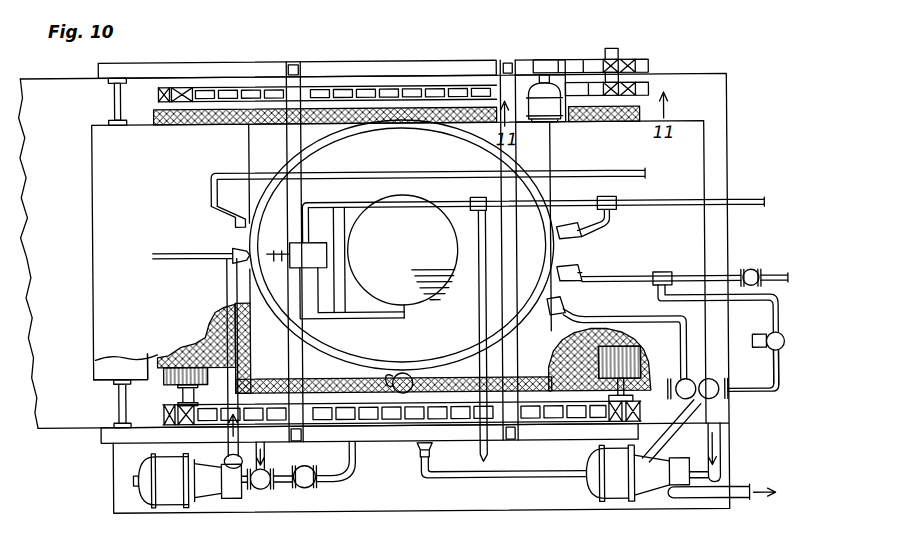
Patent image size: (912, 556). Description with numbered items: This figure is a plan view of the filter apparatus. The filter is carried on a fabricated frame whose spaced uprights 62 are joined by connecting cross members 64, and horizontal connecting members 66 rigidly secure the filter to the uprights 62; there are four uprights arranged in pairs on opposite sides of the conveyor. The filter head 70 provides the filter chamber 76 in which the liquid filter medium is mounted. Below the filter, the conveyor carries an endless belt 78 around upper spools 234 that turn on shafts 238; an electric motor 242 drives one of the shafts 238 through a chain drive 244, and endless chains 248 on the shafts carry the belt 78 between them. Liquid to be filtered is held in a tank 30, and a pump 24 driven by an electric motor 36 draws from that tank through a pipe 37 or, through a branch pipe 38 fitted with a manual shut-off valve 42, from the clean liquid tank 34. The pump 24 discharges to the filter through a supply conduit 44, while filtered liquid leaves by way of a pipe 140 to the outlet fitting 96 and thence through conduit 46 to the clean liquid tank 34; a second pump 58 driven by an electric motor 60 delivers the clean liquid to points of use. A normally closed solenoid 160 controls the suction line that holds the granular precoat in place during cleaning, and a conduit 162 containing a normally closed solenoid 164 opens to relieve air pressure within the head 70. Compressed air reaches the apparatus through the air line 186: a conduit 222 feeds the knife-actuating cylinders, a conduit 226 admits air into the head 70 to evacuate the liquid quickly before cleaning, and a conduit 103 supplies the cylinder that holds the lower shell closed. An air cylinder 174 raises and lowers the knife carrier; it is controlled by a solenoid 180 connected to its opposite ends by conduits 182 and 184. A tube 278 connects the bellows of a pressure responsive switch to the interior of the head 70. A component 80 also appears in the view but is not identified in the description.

The clean liquid tank 34 is at (729, 116).
The contaminated liquid tank 30 is at (67, 420).
The filter chamber 76 is at (117, 208).
The seal housing 80 is at (106, 378).
The connecting cross members 64 is at (390, 62).
The endless chains 248 is at (420, 84).
The conveyor belt 78 is at (213, 122).
The uprights 62 is at (294, 62).
The horizontal connecting members 66 is at (287, 141).
The electric motor 242 is at (553, 124).
The chain drive 244 is at (597, 58).
The air cylinder 174 is at (436, 298).
The conduit 226 is at (412, 180).
The compressed air line 186 is at (312, 206).
The solenoid 180 is at (328, 253).
The conduit 182 is at (321, 296).
The conduit 184 is at (404, 320).
The conduit 103 is at (487, 268).
The conduit 222 is at (597, 224).
The head 70 is at (560, 258).
The outlet fitting 96 is at (557, 291).
The conduit 46 is at (636, 281).
The solenoid 160 is at (765, 257).
The conduit 162 is at (769, 335).
The solenoid 164 is at (770, 386).
The upper spools 234 is at (620, 348).
The shafts 238 is at (625, 391).
The electric motor 60 is at (612, 500).
The second pump 58 is at (680, 461).
The pipe 140 is at (513, 478).
The electric motor 36 is at (172, 503).
The pump 24 is at (231, 498).
The supply conduit 44 is at (226, 279).
The tube 278 is at (177, 240).
The pipe 37 is at (266, 492).
The manual shut-off valve 42 is at (315, 487).
The branch pipe 38 is at (340, 478).